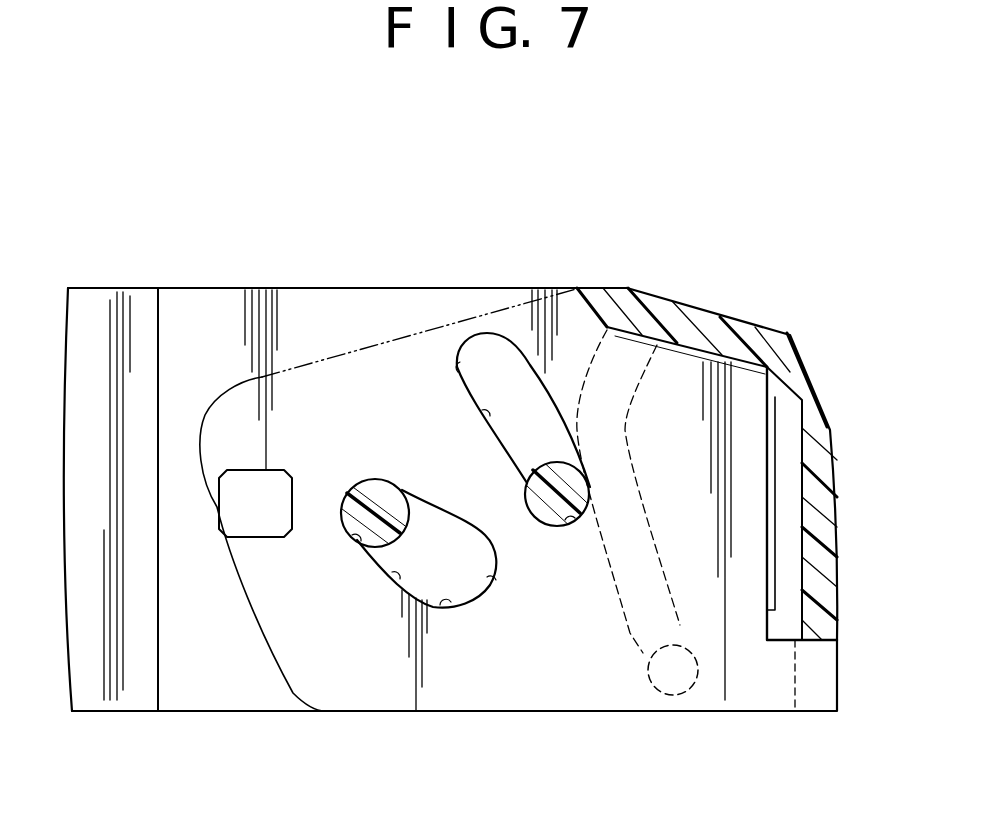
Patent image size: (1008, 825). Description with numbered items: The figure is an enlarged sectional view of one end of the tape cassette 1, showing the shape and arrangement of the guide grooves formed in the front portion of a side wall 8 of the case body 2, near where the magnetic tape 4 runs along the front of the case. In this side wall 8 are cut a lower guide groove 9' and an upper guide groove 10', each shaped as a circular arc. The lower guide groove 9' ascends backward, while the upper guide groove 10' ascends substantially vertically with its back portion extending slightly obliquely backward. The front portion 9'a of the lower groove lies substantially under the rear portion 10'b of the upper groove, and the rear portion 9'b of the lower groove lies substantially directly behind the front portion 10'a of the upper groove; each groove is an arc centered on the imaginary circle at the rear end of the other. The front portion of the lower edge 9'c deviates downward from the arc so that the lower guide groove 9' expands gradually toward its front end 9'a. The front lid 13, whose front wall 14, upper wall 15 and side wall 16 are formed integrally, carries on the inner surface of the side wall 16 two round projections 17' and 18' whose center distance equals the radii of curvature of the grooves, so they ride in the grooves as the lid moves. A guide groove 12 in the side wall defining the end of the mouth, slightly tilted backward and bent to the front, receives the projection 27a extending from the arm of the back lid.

The tape cassette 1 is at (869, 260).
The case body 2 is at (113, 288).
The magnetic tape 4 is at (775, 547).
The side wall 8 is at (238, 312).
The lower guide groove 9' is at (427, 546).
The front portion of lower guide groove 9'a is at (518, 603).
The rear portion of lower guide groove 9'b is at (372, 498).
The lower edge of lower guide groove 9'c is at (453, 629).
The upper guide groove 10' is at (495, 459).
The front portion of upper guide groove 10'a is at (555, 508).
The rear portion of upper guide groove 10'b is at (418, 387).
The guide groove 12 is at (672, 680).
The front lid 13 is at (843, 218).
The front wall 14 is at (838, 430).
The upper wall 15 is at (707, 308).
The side wall 16 is at (497, 312).
The round projection 17' is at (389, 481).
The round projection 18' is at (545, 519).
The projection 27a is at (660, 645).